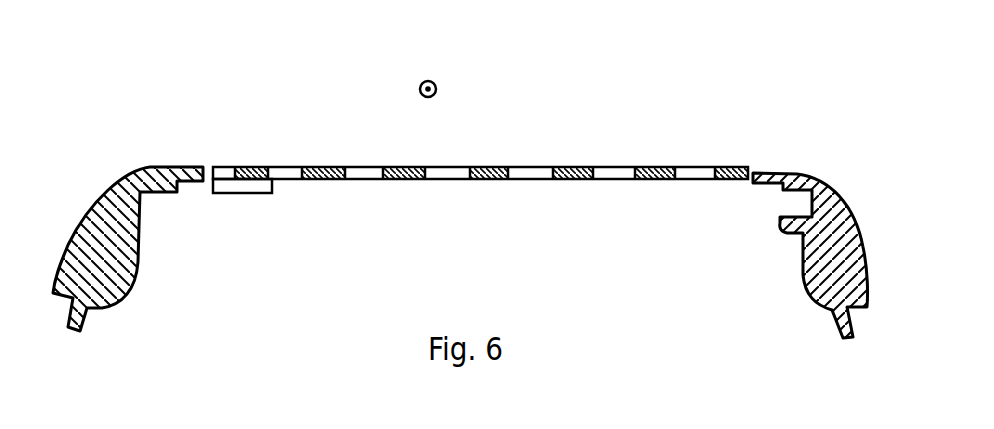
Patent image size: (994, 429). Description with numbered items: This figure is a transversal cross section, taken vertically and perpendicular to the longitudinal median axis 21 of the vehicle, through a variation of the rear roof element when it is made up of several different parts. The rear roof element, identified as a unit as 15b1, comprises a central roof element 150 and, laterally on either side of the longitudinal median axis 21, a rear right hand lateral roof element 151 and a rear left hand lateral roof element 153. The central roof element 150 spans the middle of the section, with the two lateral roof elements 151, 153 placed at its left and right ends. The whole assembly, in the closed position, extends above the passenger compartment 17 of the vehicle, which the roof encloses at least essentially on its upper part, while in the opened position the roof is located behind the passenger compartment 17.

The rear right hand lateral roof element 151 is at (112, 184).
The rear left hand lateral roof element 153 is at (840, 196).
The central roof element 150 is at (315, 167).
The rear roof element 15b1 is at (566, 143).
The longitudinal median axis 21 is at (418, 89).
The passenger compartment 17 is at (474, 245).